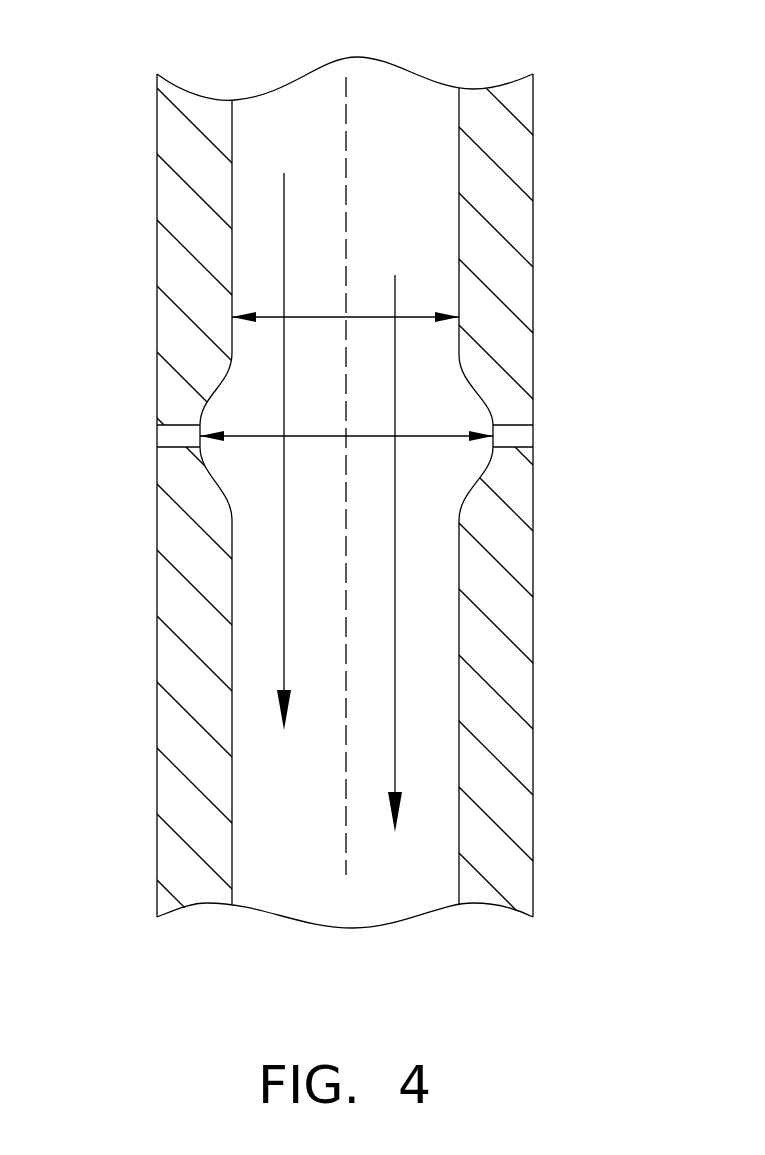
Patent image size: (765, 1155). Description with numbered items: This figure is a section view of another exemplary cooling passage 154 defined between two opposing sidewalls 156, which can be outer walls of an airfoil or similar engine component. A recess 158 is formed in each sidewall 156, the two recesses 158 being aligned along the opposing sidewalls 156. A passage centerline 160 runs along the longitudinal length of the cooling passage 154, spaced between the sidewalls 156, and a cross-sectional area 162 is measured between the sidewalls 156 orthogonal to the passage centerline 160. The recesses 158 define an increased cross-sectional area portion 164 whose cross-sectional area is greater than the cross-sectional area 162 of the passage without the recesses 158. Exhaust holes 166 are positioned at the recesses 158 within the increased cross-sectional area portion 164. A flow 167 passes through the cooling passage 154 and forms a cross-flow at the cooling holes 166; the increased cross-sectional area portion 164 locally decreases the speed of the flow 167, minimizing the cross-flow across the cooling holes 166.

The cooling passage 154 is at (421, 85).
The sidewall 156 is at (532, 298).
The recess 158 is at (487, 413).
The passage centerline 160 is at (343, 85).
The cross-sectional area 162 is at (377, 315).
The increased cross-sectional area portion 164 is at (413, 437).
The exhaust hole 166 is at (165, 437).
The flow 167 is at (285, 647).